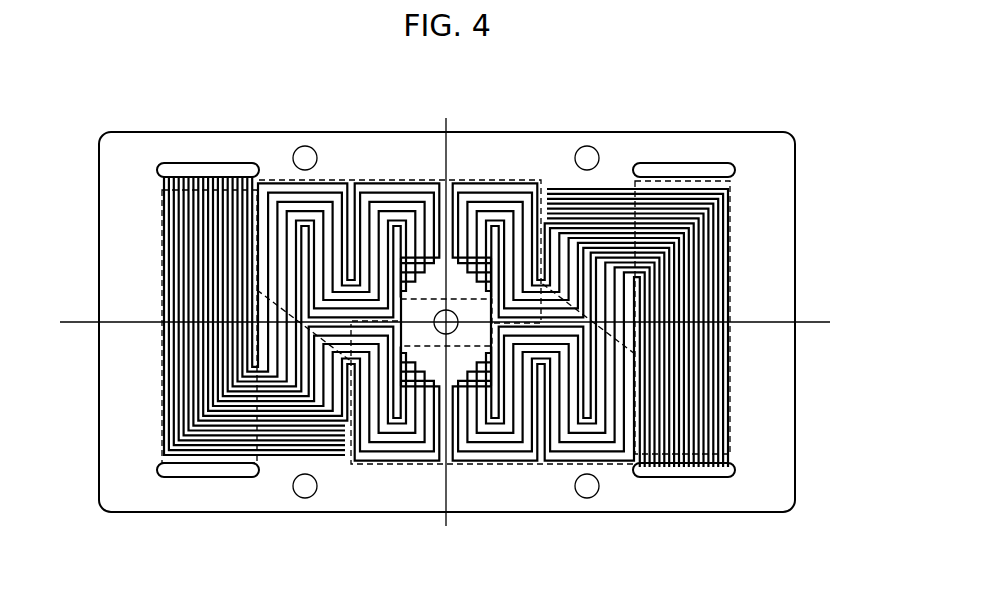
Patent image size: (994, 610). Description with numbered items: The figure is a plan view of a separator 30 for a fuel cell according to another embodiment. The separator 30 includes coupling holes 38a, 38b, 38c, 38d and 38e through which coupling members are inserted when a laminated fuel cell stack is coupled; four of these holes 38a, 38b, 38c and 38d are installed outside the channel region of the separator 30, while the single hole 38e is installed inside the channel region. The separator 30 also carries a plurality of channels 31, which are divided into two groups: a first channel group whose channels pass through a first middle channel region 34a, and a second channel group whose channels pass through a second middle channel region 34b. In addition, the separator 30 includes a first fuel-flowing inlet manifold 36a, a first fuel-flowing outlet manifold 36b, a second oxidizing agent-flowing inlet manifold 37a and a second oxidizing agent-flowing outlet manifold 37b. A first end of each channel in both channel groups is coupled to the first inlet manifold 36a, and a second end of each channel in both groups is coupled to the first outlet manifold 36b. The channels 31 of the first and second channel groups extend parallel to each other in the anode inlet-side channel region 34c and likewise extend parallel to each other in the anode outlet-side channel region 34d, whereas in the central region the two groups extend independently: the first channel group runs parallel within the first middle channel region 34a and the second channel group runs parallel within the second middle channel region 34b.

The separator 30 is at (465, 276).
The channels 31 is at (730, 408).
The first middle channel region 34a is at (491, 468).
The second middle channel region 34b is at (400, 180).
The anode inlet-side channel region 34c is at (160, 366).
The anode outlet-side channel region 34d is at (732, 241).
The first fuel-flowing inlet manifold 36a is at (228, 166).
The first fuel-flowing outlet manifold 36b is at (690, 480).
The second oxidizing agent-flowing inlet manifold 37a is at (696, 165).
The second oxidizing agent-flowing outlet manifold 37b is at (222, 480).
The coupling hole 38a is at (306, 147).
The coupling hole 38b is at (588, 147).
The coupling hole 38c is at (588, 498).
The coupling hole 38d is at (305, 498).
The coupling hole 38e is at (445, 335).